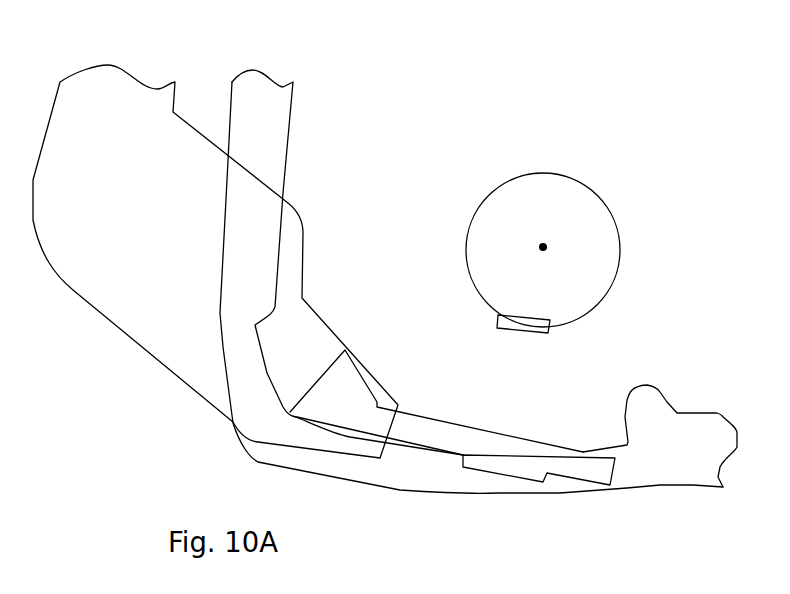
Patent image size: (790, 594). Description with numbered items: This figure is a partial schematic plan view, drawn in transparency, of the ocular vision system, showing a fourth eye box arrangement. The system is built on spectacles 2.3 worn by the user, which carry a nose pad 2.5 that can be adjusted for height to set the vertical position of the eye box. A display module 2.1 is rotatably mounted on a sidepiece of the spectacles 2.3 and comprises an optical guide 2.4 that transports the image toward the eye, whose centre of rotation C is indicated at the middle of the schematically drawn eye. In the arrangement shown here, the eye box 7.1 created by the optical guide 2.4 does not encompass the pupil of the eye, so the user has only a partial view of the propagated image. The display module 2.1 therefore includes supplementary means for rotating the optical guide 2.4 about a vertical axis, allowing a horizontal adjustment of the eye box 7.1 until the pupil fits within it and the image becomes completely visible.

The display module 2.1 is at (75, 292).
The spectacles 2.3 is at (287, 132).
The optical guide 2.4 is at (452, 428).
The nose pad 2.5 is at (657, 393).
The eye box 7.1 is at (498, 318).
The centre of rotation of the eye C is at (547, 245).